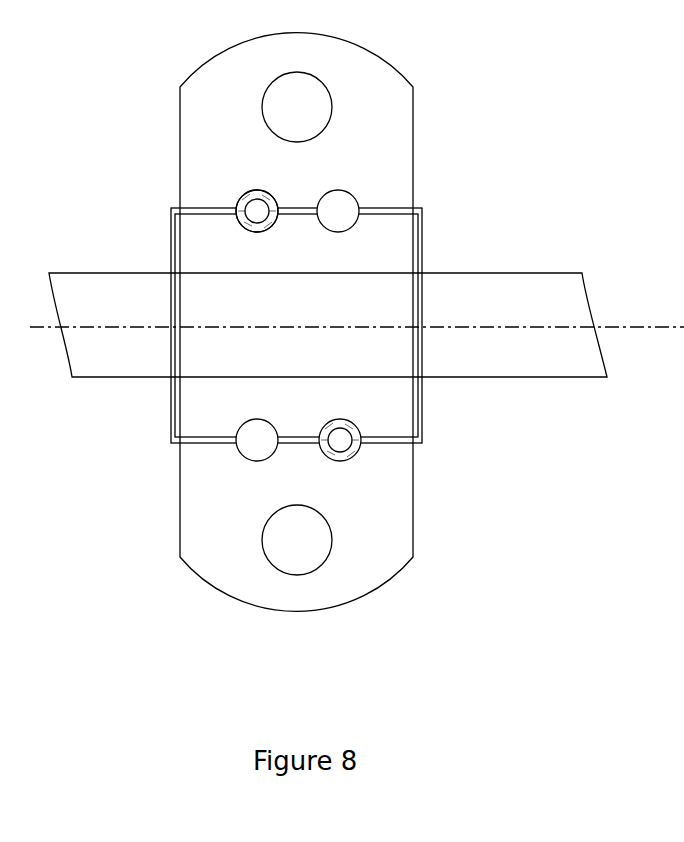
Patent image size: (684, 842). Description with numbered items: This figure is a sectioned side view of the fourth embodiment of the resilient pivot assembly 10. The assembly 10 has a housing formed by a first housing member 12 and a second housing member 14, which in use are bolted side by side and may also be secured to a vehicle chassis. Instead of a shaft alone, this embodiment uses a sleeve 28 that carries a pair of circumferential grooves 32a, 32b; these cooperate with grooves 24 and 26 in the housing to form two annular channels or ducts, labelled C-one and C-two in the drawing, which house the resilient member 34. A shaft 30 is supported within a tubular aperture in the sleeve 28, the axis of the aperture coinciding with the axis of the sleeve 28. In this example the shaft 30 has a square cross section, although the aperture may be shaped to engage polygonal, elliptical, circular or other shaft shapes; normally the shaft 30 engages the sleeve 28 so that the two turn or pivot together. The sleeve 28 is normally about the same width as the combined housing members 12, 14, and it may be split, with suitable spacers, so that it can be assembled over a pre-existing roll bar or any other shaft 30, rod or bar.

The resilient pivot assembly 10 is at (125, 163).
The first housing member 12 is at (383, 120).
The second housing member 14 is at (0, 179).
The groove 24 is at (248, 462).
The groove 26 is at (340, 462).
The sleeve 28 is at (395, 244).
The shaft 30 is at (347, 325).
The circumferential groove 32a is at (268, 228).
The circumferential groove 32b is at (333, 233).
The resilient member 34 is at (250, 192).